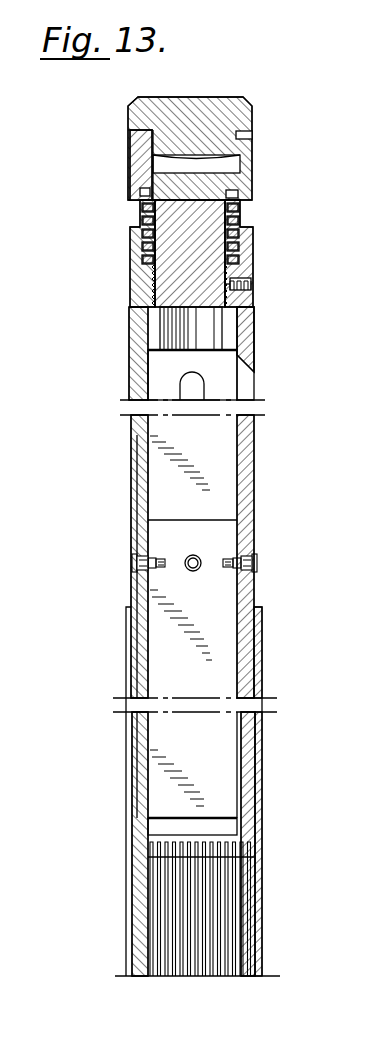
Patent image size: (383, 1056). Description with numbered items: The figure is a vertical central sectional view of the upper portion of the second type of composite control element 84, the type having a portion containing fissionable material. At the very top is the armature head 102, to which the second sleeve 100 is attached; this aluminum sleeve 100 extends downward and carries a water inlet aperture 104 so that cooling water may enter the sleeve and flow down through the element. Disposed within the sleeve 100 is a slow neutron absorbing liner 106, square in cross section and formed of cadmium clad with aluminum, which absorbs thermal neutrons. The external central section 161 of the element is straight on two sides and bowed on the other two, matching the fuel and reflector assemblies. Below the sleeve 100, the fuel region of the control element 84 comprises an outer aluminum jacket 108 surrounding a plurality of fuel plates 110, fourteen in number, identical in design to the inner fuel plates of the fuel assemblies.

The armature head 102 is at (255, 256).
The water inlet aperture 104 is at (148, 352).
The second sleeve 100 is at (137, 490).
The control element 84 is at (258, 518).
The central section 161 is at (128, 636).
The slow neutron absorbing liner 106 is at (262, 644).
The outer jacket 108 is at (256, 905).
The fuel plates 110 is at (233, 965).